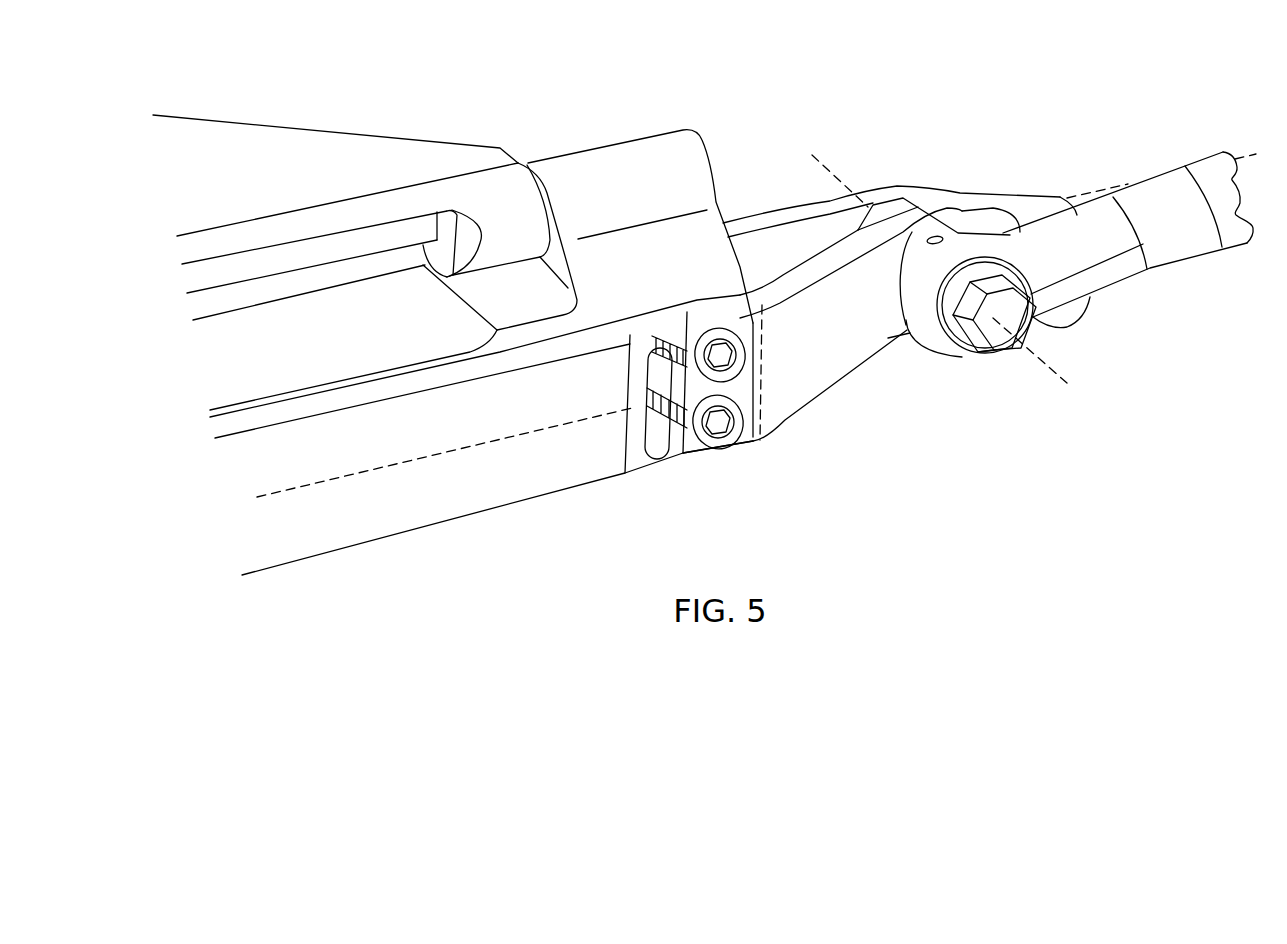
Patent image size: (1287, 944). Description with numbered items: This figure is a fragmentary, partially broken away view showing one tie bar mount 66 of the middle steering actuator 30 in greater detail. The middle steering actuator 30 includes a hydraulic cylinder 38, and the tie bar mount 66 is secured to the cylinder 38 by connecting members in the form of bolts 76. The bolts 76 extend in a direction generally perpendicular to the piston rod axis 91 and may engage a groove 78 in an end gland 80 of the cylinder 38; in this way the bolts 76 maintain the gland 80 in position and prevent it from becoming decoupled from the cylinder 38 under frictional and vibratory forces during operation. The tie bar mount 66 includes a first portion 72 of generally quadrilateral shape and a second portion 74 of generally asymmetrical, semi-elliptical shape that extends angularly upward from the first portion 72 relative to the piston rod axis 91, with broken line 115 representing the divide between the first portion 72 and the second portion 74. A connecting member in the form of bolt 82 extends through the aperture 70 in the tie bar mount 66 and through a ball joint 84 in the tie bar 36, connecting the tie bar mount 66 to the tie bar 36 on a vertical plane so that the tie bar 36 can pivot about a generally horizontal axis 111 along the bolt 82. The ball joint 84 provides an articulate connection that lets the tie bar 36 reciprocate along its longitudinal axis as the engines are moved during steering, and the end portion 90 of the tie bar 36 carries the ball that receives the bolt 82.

The middle steering actuator 30 is at (582, 95).
The tie bar 36 is at (1183, 258).
The hydraulic cylinder 38 is at (408, 343).
The tie bar mount 66 is at (850, 360).
The aperture 70 is at (947, 225).
The first portion 72 is at (752, 322).
The second portion 74 is at (805, 307).
The bolts 76 is at (740, 367).
The groove 78 is at (660, 435).
The end gland 80 is at (640, 462).
The bolt 82 is at (1018, 325).
The ball joint 84 is at (985, 358).
The end portion 90 is at (1143, 322).
The piston rod axis 91 is at (1126, 183).
The horizontal axis 111 is at (831, 170).
The broken line 115 is at (760, 386).